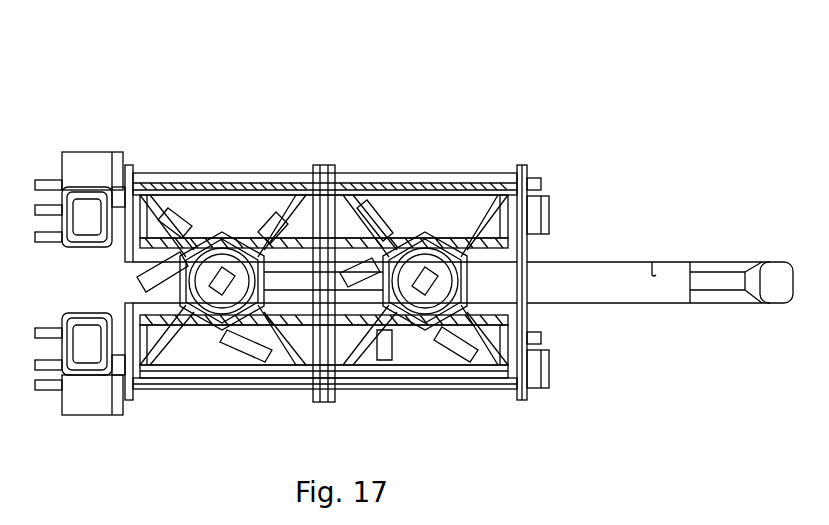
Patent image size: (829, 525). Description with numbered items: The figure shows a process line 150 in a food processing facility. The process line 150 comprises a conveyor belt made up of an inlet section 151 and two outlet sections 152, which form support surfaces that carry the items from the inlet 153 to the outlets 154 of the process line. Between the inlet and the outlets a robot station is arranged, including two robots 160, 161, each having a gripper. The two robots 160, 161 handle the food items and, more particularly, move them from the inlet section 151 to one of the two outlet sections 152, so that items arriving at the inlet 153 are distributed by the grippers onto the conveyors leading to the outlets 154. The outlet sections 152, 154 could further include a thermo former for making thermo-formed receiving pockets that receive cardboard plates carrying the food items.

The process line 150 is at (510, 70).
The inlet section 151 is at (598, 272).
The outlet sections 152 is at (210, 198).
The inlet 153 is at (763, 282).
The outlets 154 is at (100, 160).
The robot 160 is at (452, 254).
The robot 161 is at (234, 254).